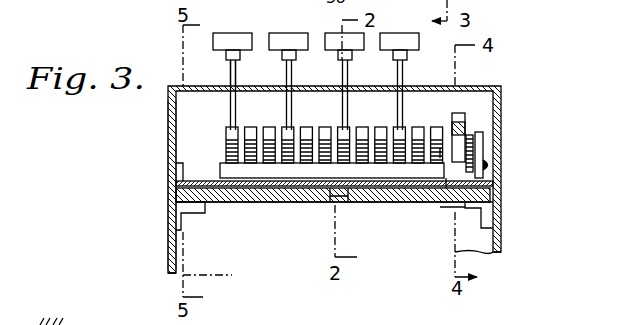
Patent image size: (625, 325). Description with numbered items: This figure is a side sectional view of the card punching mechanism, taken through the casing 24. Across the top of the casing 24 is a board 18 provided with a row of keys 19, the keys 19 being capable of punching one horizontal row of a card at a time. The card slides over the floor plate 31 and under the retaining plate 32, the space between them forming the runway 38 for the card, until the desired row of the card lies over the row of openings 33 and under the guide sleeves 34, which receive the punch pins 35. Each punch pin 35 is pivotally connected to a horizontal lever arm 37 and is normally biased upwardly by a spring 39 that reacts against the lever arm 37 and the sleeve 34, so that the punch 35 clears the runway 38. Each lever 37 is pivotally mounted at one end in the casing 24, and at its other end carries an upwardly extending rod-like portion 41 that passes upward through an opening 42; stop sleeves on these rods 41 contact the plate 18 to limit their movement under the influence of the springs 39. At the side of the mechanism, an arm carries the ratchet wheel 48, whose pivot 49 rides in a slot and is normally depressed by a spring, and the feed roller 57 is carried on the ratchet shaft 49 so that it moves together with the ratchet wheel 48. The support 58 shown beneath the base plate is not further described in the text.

The board 18 is at (482, 86).
The keys 19 is at (292, 42).
The casing 24 is at (168, 132).
The floor plate 31 is at (307, 203).
The retaining plate 32 is at (270, 194).
The row of openings 33 is at (416, 7).
The guide sleeves 34 is at (428, 176).
The punch pins 35 is at (462, 157).
The arm 37 is at (110, 4).
The runway 38 is at (381, 202).
The spring 39 is at (225, 140).
The upwardly extending portions 41 is at (237, 69).
The openings 42 is at (230, 86).
The ratchet wheel 48 is at (466, 136).
The pivot 49 is at (453, 165).
The feed roller 57 is at (479, 140).
The support 58 is at (500, 198).